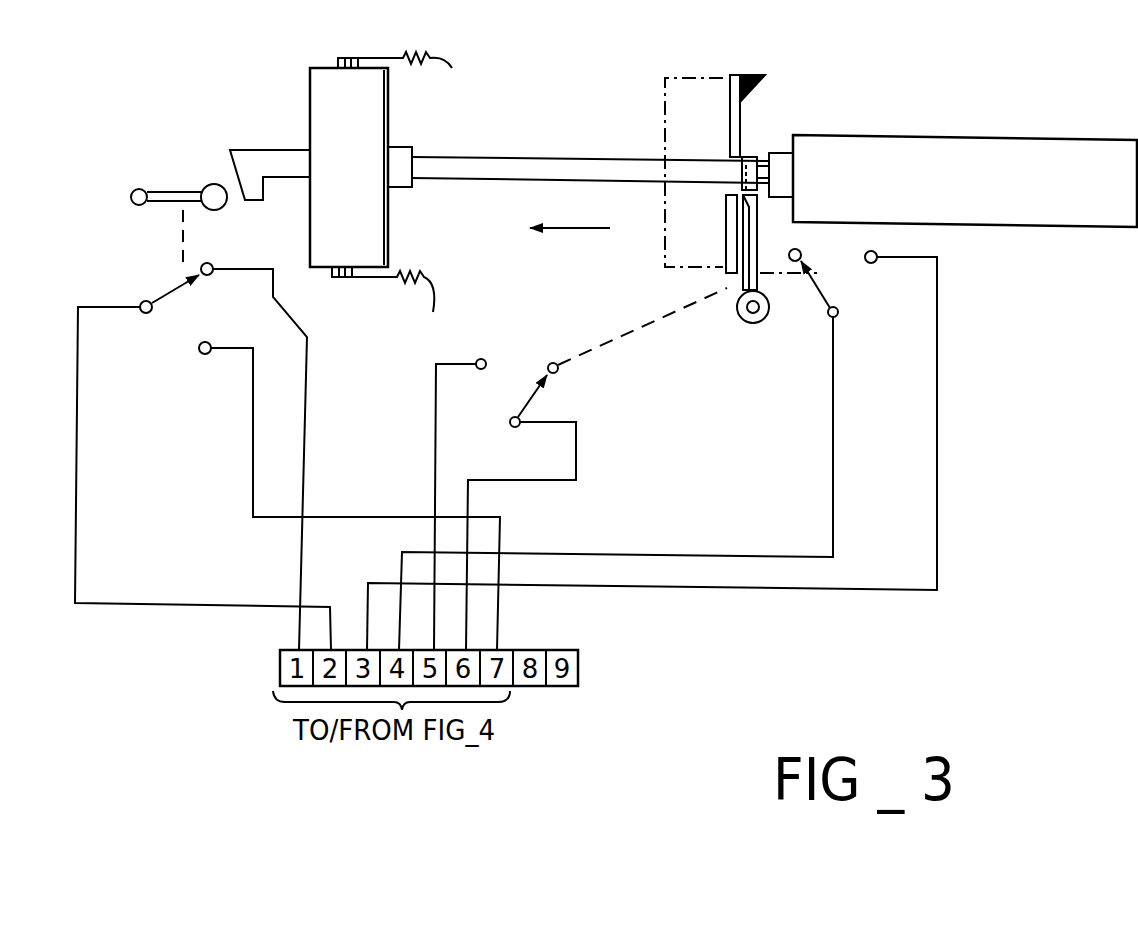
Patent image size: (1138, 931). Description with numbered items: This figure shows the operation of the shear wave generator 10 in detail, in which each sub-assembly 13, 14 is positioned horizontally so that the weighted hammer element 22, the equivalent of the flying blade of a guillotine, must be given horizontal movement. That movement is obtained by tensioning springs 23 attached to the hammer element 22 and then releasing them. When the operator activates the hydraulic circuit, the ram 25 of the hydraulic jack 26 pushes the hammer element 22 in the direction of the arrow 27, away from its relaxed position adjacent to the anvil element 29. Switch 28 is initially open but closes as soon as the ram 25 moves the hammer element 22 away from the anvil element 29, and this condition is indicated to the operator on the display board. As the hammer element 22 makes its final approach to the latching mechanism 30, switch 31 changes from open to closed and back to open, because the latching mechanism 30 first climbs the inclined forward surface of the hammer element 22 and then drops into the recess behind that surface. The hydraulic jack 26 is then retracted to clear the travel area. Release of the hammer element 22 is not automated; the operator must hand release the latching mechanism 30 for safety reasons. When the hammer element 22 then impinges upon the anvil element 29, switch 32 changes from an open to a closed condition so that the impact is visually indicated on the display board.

The shear wave generator 10 is at (947, 144).
The sub-assembly 13 is at (607, 124).
The sub-assembly 14 is at (741, 175).
The weighted hammer element 22 is at (390, 105).
The tensioning springs 23 is at (424, 201).
The ram 25 is at (539, 158).
The hydraulic jack 26 is at (1010, 133).
The arrow 27 is at (577, 207).
The switch 28 is at (787, 282).
The anvil element 29 is at (762, 92).
The latching mechanism 30 is at (146, 186).
The switch 31 is at (157, 292).
The switch 32 is at (510, 387).